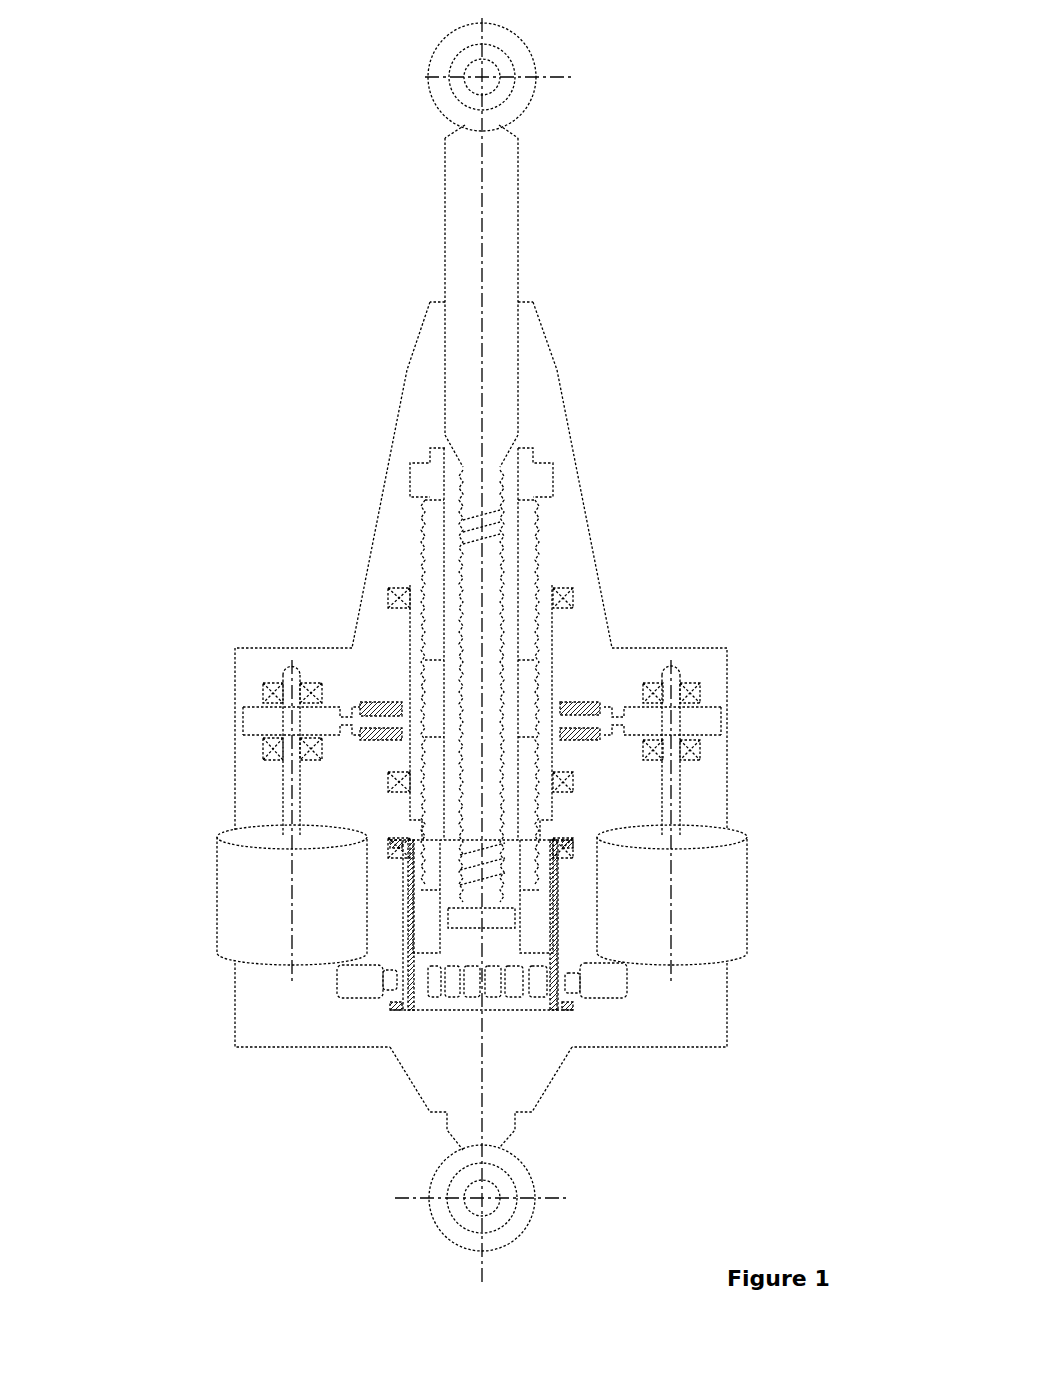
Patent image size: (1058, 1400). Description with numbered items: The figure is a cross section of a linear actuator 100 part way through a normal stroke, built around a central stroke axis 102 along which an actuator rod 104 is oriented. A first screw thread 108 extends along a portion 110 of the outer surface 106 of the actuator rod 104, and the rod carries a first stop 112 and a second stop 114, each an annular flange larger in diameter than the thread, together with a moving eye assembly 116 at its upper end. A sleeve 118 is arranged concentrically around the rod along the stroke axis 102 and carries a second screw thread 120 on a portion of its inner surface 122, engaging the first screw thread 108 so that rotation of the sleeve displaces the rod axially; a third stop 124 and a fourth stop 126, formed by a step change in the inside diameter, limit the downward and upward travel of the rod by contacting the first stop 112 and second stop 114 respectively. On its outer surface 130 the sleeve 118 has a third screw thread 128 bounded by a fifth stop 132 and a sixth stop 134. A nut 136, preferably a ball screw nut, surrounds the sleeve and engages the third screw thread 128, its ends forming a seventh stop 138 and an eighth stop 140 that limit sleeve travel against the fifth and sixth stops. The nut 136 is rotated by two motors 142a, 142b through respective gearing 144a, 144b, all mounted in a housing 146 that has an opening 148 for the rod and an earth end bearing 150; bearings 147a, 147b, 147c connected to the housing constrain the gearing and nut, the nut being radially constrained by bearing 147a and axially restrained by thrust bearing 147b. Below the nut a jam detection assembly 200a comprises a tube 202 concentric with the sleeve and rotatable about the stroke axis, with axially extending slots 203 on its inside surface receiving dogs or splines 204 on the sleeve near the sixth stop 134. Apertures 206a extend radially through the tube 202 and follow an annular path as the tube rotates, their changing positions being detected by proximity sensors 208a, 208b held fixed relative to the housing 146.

The linear actuator 100 is at (580, 326).
The stroke axis 102 is at (483, 182).
The actuator rod 104 is at (503, 257).
The outer surface 106 is at (500, 527).
The first screw thread 108 is at (500, 543).
The portion of the outer surface 110 is at (500, 622).
The first stop 112 is at (508, 480).
The second stop 114 is at (492, 983).
The moving eye assembly 116 is at (523, 71).
The sleeve 118 is at (435, 470).
The second screw thread 120 is at (457, 685).
The inner surface 122 is at (457, 675).
The third stop 124 is at (512, 658).
The fourth stop 126 is at (510, 733).
The third screw thread 128 is at (427, 543).
The outer surface 130 is at (427, 510).
The fifth stop 132 is at (418, 480).
The sixth stop 134 is at (425, 893).
The nut 136 is at (420, 700).
The seventh stop 138 is at (547, 593).
The eighth stop 140 is at (540, 812).
The motor 142a is at (235, 903).
The motor 142b is at (730, 877).
The gearing 144a is at (250, 718).
The gearing 144b is at (708, 720).
The housing 146 is at (235, 1018).
The bearing 147a is at (573, 593).
The thrust bearing 147b is at (372, 737).
The bearing 147c is at (272, 748).
The opening 148 is at (445, 298).
The earth end bearing 150 is at (452, 1233).
The jam detection assembly 200a is at (543, 1035).
The tube 202 is at (408, 1007).
The axially extending slot 203 is at (550, 927).
The dog or spline 204 is at (547, 900).
The aperture 206a is at (502, 920).
The proximity sensor 208a is at (347, 995).
The proximity sensor 208b is at (605, 982).